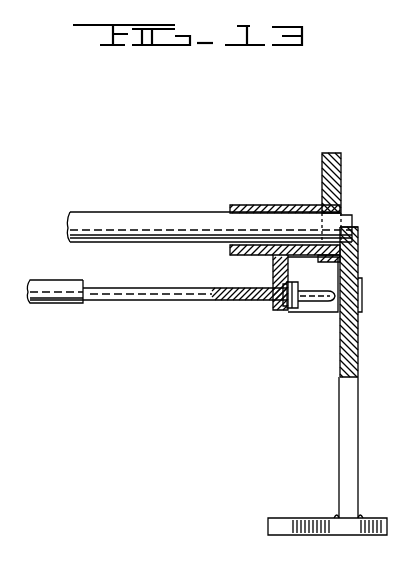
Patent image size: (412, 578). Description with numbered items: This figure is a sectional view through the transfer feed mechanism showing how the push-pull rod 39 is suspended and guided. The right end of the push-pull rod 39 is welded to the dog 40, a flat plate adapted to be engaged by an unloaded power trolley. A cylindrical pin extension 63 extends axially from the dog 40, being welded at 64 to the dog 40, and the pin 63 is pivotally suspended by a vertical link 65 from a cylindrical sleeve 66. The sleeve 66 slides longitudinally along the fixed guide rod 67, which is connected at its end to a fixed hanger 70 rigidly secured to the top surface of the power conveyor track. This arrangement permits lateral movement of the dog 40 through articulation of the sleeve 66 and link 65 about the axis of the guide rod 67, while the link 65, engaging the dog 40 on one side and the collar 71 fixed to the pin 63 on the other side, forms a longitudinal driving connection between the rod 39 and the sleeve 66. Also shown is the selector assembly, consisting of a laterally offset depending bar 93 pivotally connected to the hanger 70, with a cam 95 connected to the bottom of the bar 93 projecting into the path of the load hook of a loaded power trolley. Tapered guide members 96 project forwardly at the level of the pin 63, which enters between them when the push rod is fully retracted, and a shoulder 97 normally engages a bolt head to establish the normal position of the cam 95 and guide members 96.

The push-pull rod 39 is at (75, 292).
The dog 40 is at (196, 290).
The cylindrical pin extension 63 is at (310, 300).
The weld 64 is at (258, 302).
The vertical link 65 is at (273, 270).
The cylindrical sleeve 66 is at (270, 210).
The fixed guide rod 67 is at (149, 219).
The fixed hanger 70 is at (333, 205).
The collar 71 is at (292, 282).
The depending bar 93 is at (350, 505).
The cam 95 is at (318, 534).
The tapered guide members 96 is at (325, 313).
The shoulder 97 is at (360, 238).